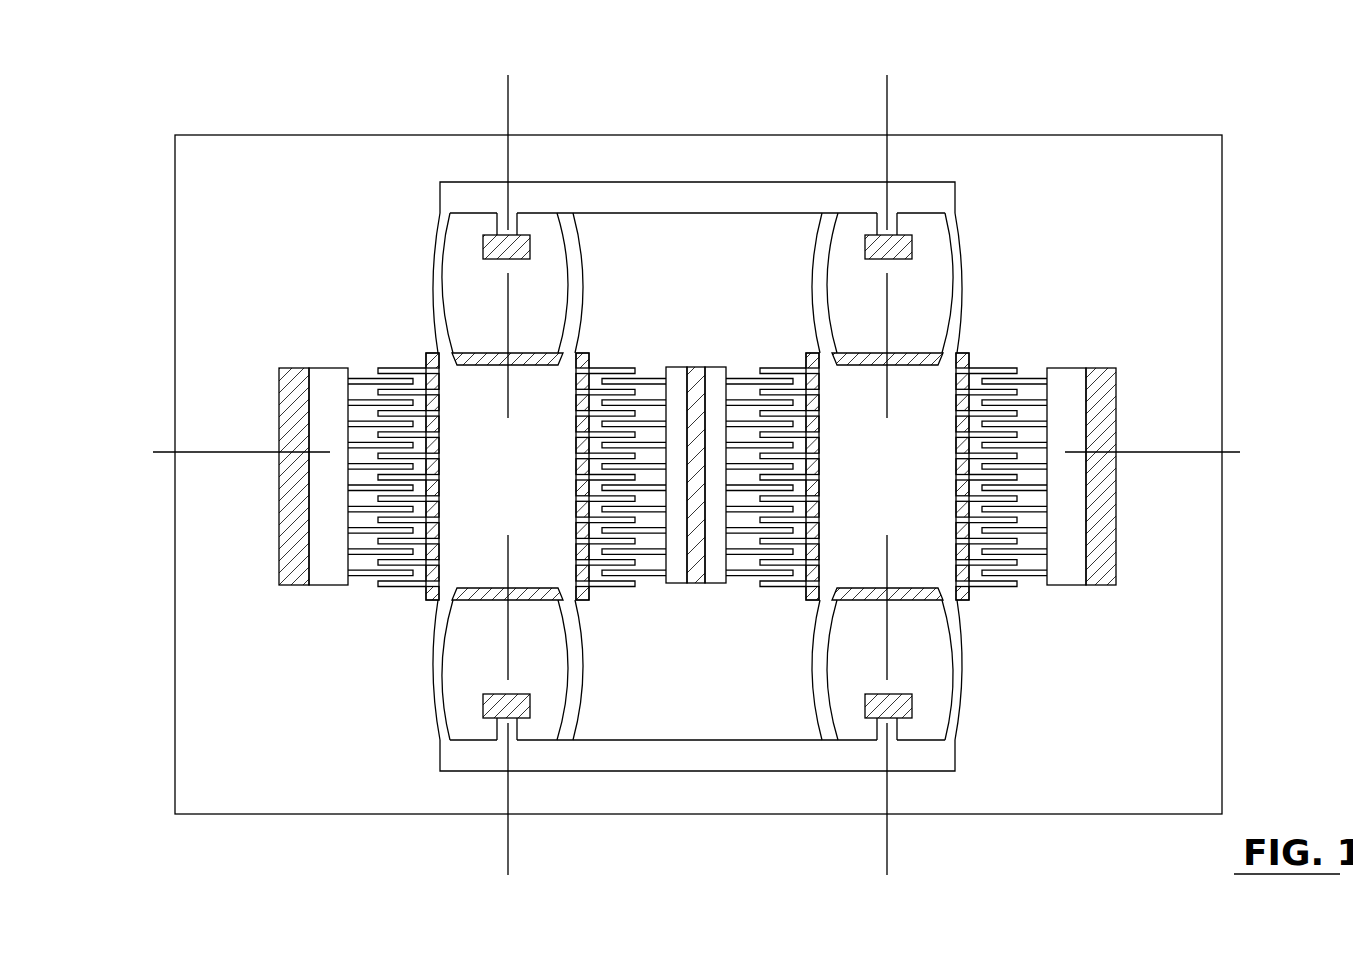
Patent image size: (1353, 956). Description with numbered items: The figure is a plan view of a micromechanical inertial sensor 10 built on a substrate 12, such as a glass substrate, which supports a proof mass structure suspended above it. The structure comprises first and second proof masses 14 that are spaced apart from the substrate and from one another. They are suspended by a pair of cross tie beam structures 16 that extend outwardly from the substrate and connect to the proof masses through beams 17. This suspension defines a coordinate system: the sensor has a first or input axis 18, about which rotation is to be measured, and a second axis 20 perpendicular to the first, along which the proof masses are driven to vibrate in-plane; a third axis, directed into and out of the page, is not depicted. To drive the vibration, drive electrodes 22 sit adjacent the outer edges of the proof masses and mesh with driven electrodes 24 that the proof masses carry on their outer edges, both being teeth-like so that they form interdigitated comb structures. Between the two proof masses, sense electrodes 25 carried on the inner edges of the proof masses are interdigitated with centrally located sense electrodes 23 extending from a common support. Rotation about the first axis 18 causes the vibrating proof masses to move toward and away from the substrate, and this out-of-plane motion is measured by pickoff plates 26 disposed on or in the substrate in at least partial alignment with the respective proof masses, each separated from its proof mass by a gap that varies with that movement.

The micromechanical inertial sensor 10 is at (1117, 92).
The substrate 12 is at (1215, 213).
The proof masses 14 is at (498, 481).
The cross tie beam structures 16 is at (665, 191).
The beams 17 is at (438, 327).
The first axis 18 is at (508, 103).
The second axis 20 is at (1229, 453).
The drive electrodes 22 is at (371, 571).
The sense electrodes 23 is at (752, 397).
The driven electrodes 24 is at (395, 388).
The sense electrodes 25 is at (770, 390).
The pickoff plates 26 is at (915, 366).